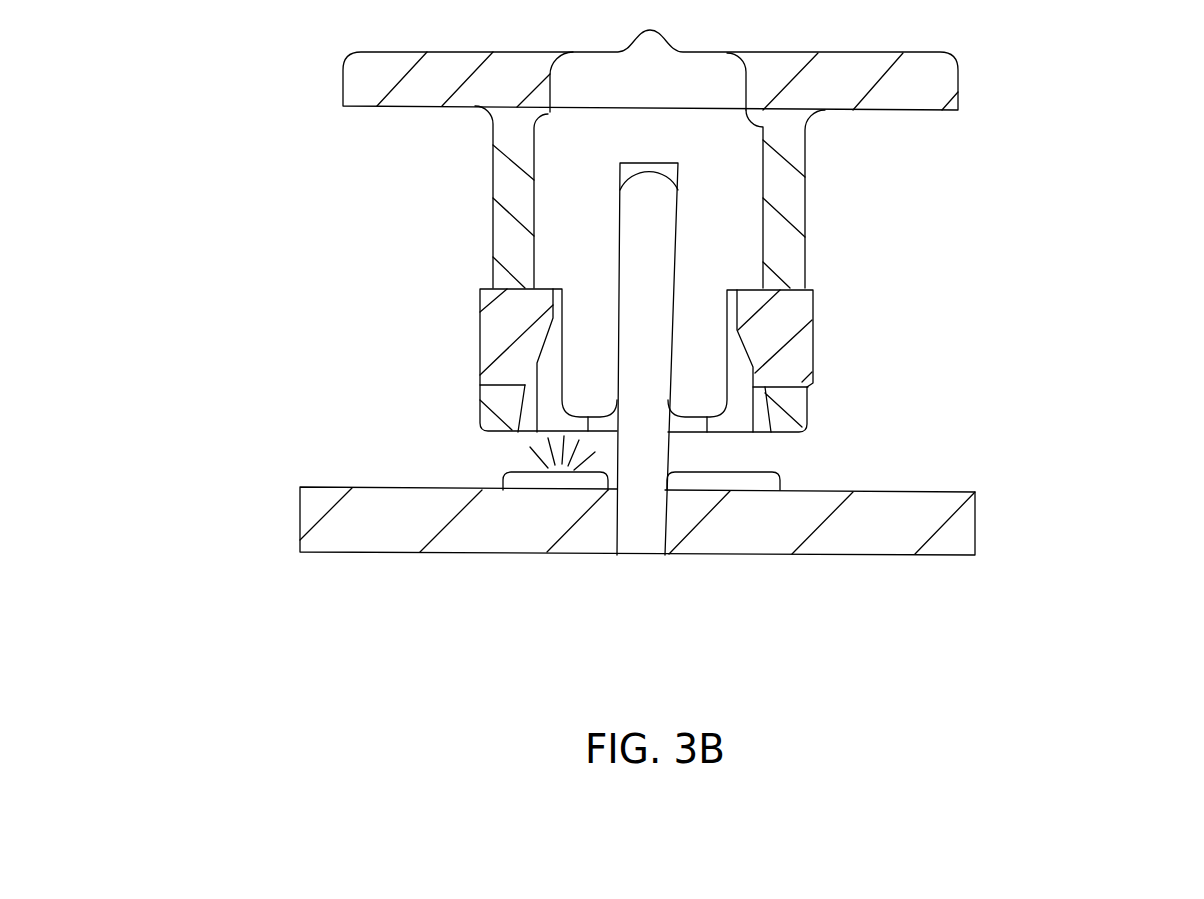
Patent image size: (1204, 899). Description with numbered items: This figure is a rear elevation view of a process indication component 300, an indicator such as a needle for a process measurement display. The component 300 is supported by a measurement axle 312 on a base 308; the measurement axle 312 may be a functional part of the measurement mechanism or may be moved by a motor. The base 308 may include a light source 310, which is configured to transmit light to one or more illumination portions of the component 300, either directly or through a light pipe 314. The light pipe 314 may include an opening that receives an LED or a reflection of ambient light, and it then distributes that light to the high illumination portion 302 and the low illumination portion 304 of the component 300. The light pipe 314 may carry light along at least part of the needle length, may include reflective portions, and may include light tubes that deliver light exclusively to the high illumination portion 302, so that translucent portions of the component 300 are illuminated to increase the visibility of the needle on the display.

The process indication component 300 is at (1084, 123).
The high illumination portion 302 is at (582, 377).
The low illumination portion 304 is at (515, 140).
The base 308 is at (300, 509).
The light source 310 is at (497, 472).
The measurement axle 312 is at (632, 555).
The light pipe 314 is at (537, 432).